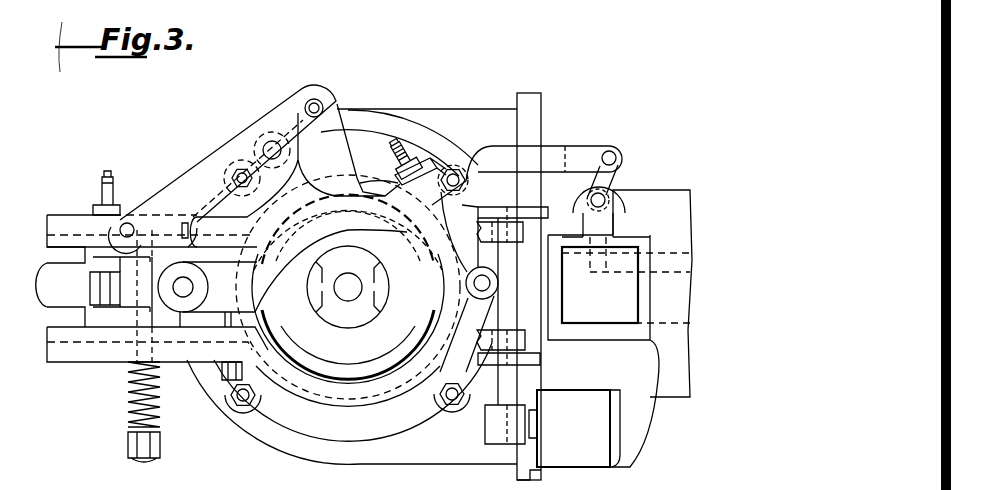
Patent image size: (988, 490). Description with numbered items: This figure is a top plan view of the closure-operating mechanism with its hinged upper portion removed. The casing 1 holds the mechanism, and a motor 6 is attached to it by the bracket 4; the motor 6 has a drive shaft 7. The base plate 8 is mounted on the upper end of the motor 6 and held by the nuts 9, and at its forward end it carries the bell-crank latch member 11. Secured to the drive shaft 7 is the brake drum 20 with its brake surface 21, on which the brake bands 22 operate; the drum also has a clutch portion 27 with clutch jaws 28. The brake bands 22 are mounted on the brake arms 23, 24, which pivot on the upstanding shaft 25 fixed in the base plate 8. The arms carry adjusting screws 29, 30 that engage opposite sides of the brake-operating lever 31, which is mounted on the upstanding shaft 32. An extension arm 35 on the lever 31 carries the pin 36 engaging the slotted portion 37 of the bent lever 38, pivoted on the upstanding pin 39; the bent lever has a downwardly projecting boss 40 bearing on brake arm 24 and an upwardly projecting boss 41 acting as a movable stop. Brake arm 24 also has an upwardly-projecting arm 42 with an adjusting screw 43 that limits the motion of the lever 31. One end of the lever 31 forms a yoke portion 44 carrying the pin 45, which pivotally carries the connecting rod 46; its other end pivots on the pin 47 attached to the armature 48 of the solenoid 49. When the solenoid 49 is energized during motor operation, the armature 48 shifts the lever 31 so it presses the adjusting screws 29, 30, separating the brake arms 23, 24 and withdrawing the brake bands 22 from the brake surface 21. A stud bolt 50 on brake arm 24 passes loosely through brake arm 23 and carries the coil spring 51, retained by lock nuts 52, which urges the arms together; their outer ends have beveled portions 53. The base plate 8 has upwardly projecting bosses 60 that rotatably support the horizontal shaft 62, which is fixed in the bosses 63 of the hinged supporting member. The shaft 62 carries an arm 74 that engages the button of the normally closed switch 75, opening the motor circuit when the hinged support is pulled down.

The casing 1 is at (690, 377).
The bracket 4 is at (542, 479).
The motor 6 is at (326, 458).
The drive shaft 7 is at (349, 285).
The base plate 8 is at (366, 440).
The nuts 9 is at (255, 399).
The latch member 11 is at (90, 285).
The brake drum 20 is at (338, 345).
The brake surface 21 is at (420, 320).
The brake bands 22 is at (329, 197).
The brake arm 23 is at (380, 405).
The brake arm 24 is at (375, 170).
The upstanding shaft 25 is at (483, 276).
The clutch portion 27 is at (352, 323).
The clutch jaws 28 is at (330, 310).
The adjusting screw 29 is at (228, 385).
The adjusting screw 30 is at (102, 191).
The brake-operating lever 31 is at (276, 286).
The upstanding shaft 32 is at (192, 287).
The extension arm 35 is at (338, 144).
The pin 36 is at (320, 103).
The slotted portion 37 is at (317, 98).
The bent lever 38 is at (197, 172).
The upstanding pin 39 is at (267, 140).
The downwardly projecting boss 40 is at (185, 222).
The upwardly projecting boss 41 is at (128, 224).
The upwardly-projecting arm 42 is at (433, 158).
The adjusting screw 43 is at (400, 142).
The yoke portion 44 is at (585, 150).
The pin 45 is at (616, 158).
The connecting rod 46 is at (612, 182).
The pin 47 is at (606, 200).
The armature 48 is at (608, 228).
The solenoid 49 is at (632, 316).
The stud bolt 50 is at (144, 455).
The coil spring 51 is at (130, 398).
The lock nuts 52 is at (128, 449).
The beveled portions 53 is at (57, 312).
The bosses 60 is at (478, 213).
The horizontal shaft 62 is at (508, 390).
The bosses 63 is at (522, 232).
The arm 74 is at (487, 432).
The switch 75 is at (562, 453).